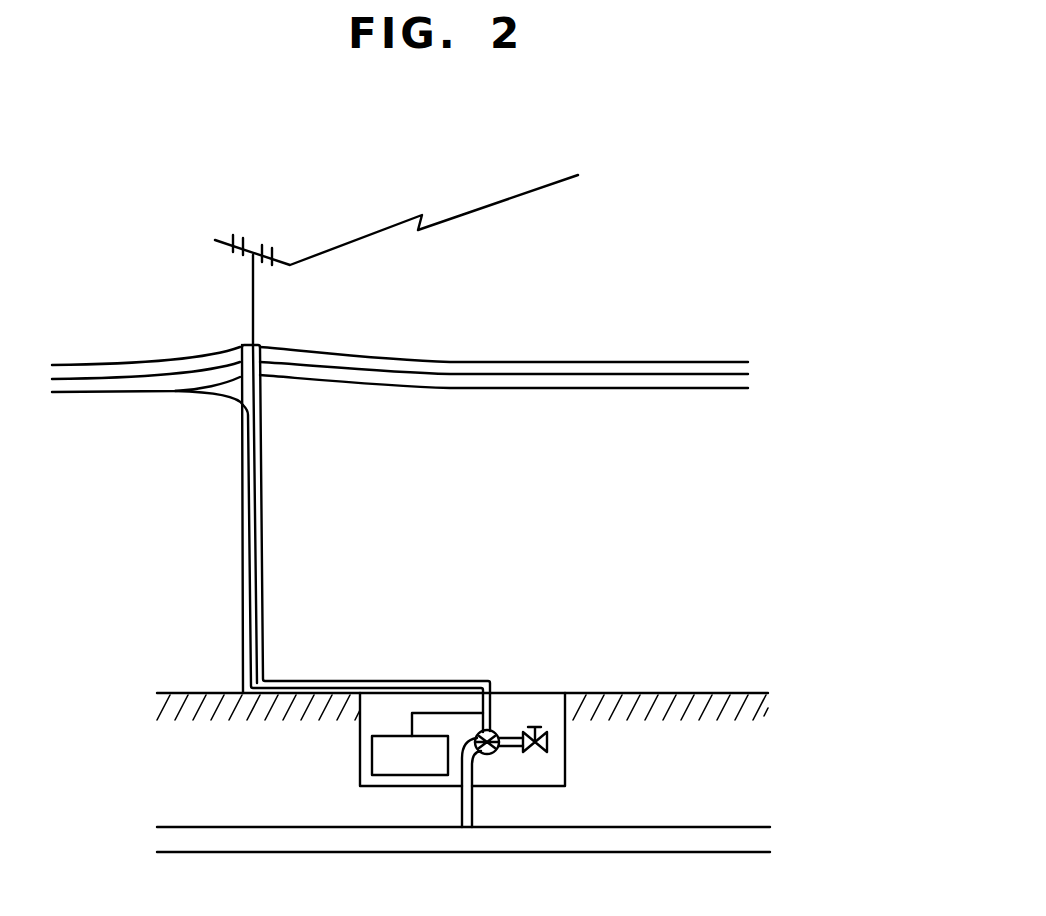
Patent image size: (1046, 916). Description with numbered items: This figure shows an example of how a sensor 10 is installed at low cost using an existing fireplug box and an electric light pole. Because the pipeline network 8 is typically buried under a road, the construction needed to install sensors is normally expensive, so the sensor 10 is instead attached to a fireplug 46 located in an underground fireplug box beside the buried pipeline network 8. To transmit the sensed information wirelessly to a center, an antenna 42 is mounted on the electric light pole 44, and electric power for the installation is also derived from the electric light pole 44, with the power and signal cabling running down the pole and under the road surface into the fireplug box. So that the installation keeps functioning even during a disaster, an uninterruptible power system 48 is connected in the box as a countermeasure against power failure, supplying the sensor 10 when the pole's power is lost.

The pipeline network 8 is at (192, 828).
The sensor 10 is at (490, 754).
The antenna 42 is at (225, 240).
The electric light pole 44 is at (262, 435).
The fireplug 46 is at (541, 752).
The uninterruptible power system (UPS) 48 is at (372, 758).